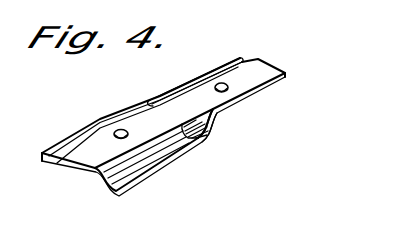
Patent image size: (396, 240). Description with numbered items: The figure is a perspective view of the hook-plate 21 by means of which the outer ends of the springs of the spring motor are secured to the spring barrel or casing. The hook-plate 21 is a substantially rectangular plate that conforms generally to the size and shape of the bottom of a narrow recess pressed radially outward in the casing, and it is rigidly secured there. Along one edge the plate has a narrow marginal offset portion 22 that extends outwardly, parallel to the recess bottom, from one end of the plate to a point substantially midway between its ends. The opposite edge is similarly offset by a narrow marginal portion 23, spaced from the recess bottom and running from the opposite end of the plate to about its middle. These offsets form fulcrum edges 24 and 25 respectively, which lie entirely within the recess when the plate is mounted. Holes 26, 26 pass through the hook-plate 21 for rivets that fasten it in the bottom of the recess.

The hook-plate 21 is at (264, 61).
The marginal offset portion 22 is at (134, 174).
The marginal portion 23 is at (192, 82).
The fulcrum edge 24 is at (185, 148).
The fulcrum edge 25 is at (203, 70).
The holes 26 is at (117, 130).